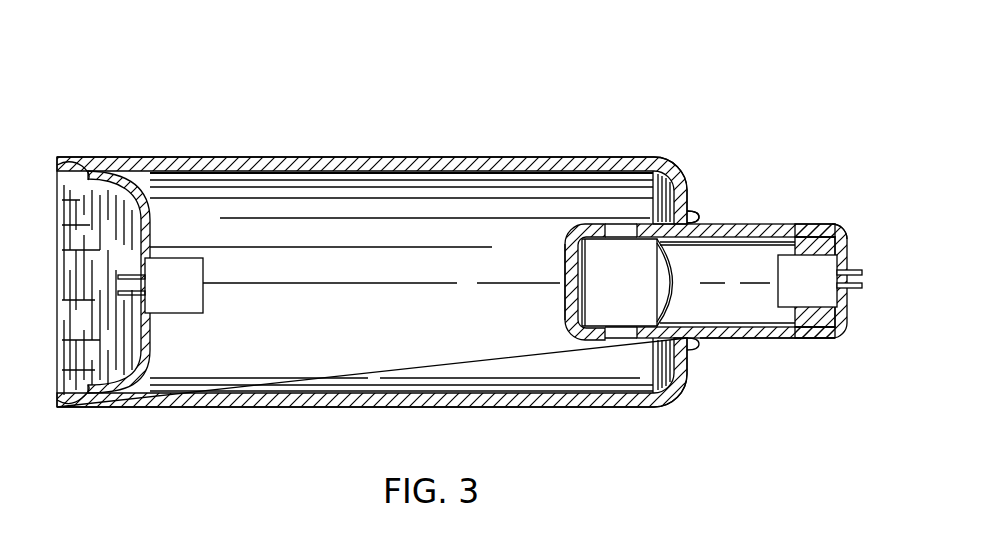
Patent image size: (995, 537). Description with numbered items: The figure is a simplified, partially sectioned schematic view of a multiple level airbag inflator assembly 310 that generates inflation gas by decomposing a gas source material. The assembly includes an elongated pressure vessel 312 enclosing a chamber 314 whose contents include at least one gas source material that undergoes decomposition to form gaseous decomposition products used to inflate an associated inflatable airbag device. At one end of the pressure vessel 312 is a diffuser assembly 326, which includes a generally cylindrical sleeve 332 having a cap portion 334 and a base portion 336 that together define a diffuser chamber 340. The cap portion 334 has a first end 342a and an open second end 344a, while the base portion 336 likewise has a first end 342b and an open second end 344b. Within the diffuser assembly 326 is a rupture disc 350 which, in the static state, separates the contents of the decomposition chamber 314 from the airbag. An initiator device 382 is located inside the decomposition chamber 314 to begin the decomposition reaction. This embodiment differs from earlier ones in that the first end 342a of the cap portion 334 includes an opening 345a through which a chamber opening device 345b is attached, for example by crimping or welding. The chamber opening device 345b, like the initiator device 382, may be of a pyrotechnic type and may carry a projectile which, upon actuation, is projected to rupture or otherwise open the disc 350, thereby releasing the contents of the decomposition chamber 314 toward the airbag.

The multiple level airbag inflator assembly 310 is at (430, 146).
The pressure vessel 312 is at (533, 158).
The chamber 314 is at (277, 195).
The diffuser assembly 326 is at (846, 228).
The cylindrical sleeve 332 is at (652, 395).
The cap portion 334 is at (793, 330).
The base portion 336 is at (562, 268).
The diffuser chamber 340 is at (735, 262).
The first end of cap portion 342a is at (838, 337).
The first end of base portion 342b is at (570, 315).
The open second end of cap portion 344a is at (697, 217).
The open second end of base portion 344b is at (657, 222).
The opening 345a is at (852, 290).
The chamber opening device 345b is at (805, 268).
The rupture disc 350 is at (640, 278).
The initiator device 382 is at (185, 280).